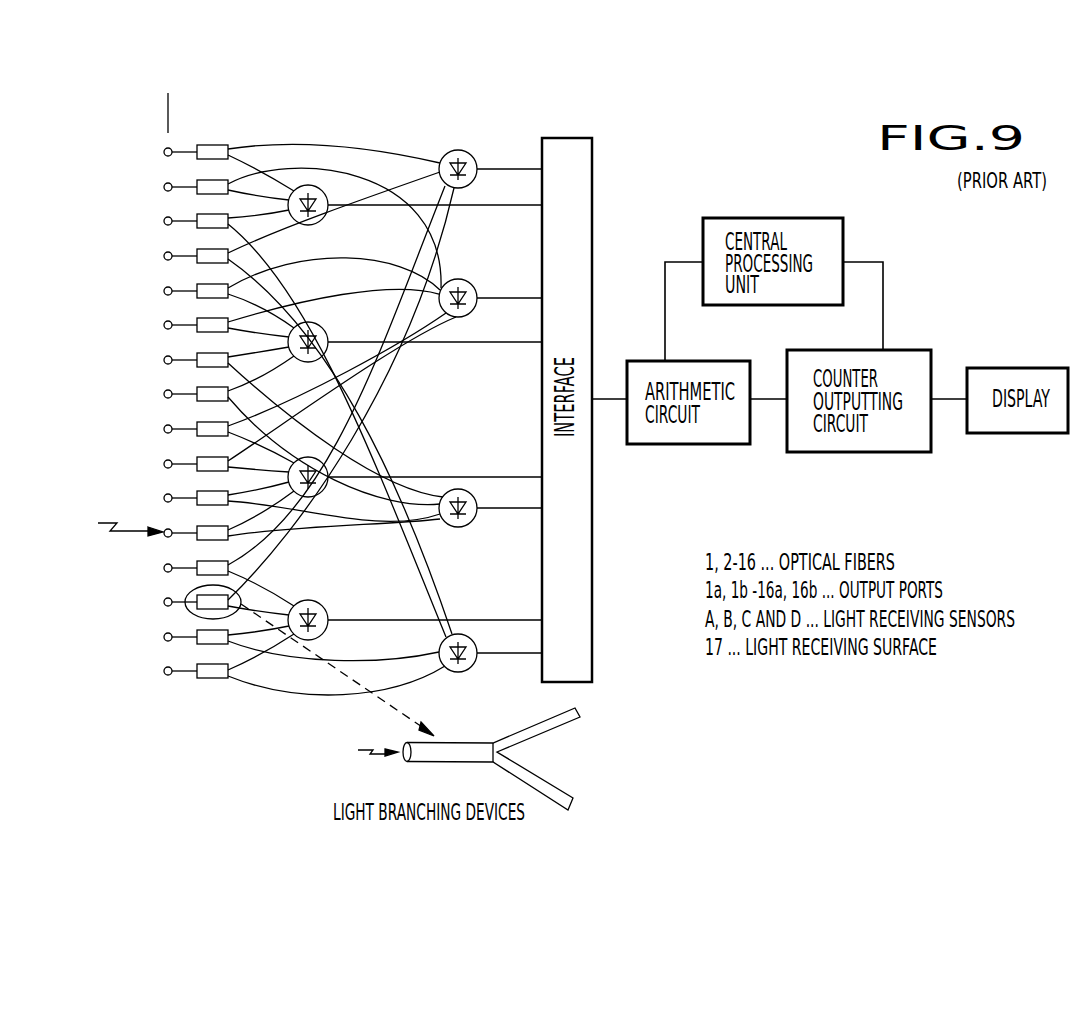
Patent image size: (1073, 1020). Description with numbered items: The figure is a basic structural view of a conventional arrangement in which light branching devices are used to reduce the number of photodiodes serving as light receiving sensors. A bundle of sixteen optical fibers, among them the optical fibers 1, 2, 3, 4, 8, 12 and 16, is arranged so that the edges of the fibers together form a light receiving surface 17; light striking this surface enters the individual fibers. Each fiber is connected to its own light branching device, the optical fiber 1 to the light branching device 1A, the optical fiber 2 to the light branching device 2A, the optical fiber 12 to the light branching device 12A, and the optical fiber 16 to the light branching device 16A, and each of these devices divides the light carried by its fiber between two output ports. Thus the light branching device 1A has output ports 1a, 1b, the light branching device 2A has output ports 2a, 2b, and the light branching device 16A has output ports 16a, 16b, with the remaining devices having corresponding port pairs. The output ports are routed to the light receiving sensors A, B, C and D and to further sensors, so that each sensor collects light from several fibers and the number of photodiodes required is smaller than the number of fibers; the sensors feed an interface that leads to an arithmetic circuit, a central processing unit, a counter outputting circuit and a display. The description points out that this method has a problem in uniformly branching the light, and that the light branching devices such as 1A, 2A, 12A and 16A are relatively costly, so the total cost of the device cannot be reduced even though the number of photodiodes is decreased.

The optical fiber 1 is at (174, 152).
The optical fiber 2 is at (174, 187).
The optical fiber 3 is at (189, 221).
The optical fiber 4 is at (189, 256).
The optical fiber 8 is at (189, 394).
The optical fiber 12 is at (165, 529).
The optical fiber 16 is at (172, 671).
The light branching device 1A is at (203, 160).
The light branching device 2A is at (203, 195).
The light branching device 12A is at (207, 545).
The light branching device 16A is at (205, 680).
The output port 1a is at (263, 142).
The output port 1b is at (274, 193).
The output port 2a is at (240, 180).
The output port 2b is at (293, 184).
The output port 16a is at (253, 672).
The output port 16b is at (278, 687).
The light receiving surface 17 is at (167, 113).
The light receiving sensor A is at (415, 202).
The light receiving sensor B is at (415, 354).
The light receiving sensor C is at (415, 481).
The light receiving sensor D is at (415, 611).